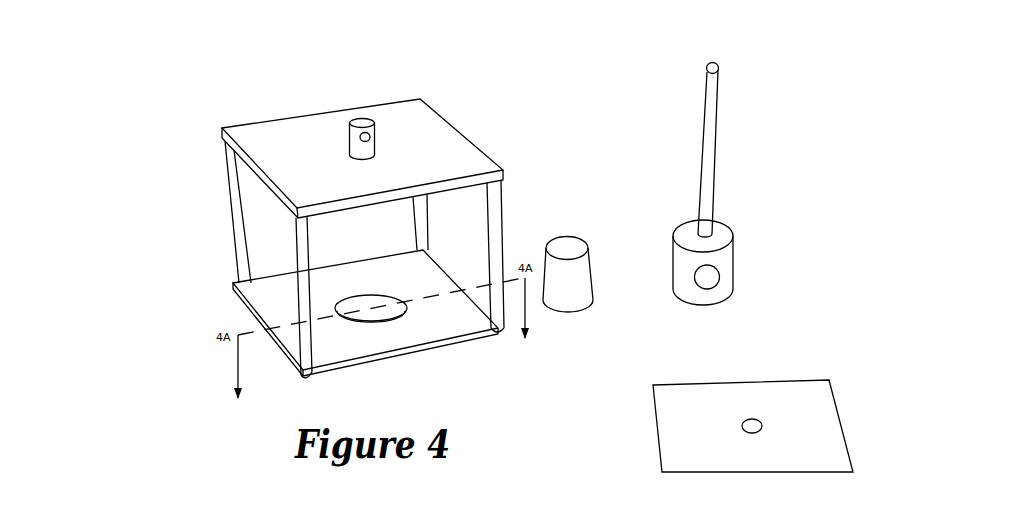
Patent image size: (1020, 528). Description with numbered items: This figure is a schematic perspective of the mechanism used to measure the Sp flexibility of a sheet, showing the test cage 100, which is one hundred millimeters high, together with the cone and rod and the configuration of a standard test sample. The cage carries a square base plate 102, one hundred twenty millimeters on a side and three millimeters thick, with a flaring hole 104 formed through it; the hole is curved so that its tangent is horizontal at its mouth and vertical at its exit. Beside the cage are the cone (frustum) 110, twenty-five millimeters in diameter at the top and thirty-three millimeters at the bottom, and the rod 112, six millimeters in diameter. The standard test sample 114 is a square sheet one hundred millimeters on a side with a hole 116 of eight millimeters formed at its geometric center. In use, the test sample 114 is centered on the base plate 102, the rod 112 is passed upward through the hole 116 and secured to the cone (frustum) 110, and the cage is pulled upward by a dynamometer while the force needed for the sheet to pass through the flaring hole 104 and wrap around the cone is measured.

The test cage 100 is at (308, 260).
The square base plate 102 is at (442, 351).
The flaring hole 104 is at (376, 328).
The cone (frustum) 110 is at (600, 278).
The rod 112 is at (693, 123).
The standard test sample 114 is at (700, 396).
The hole 116 is at (772, 425).